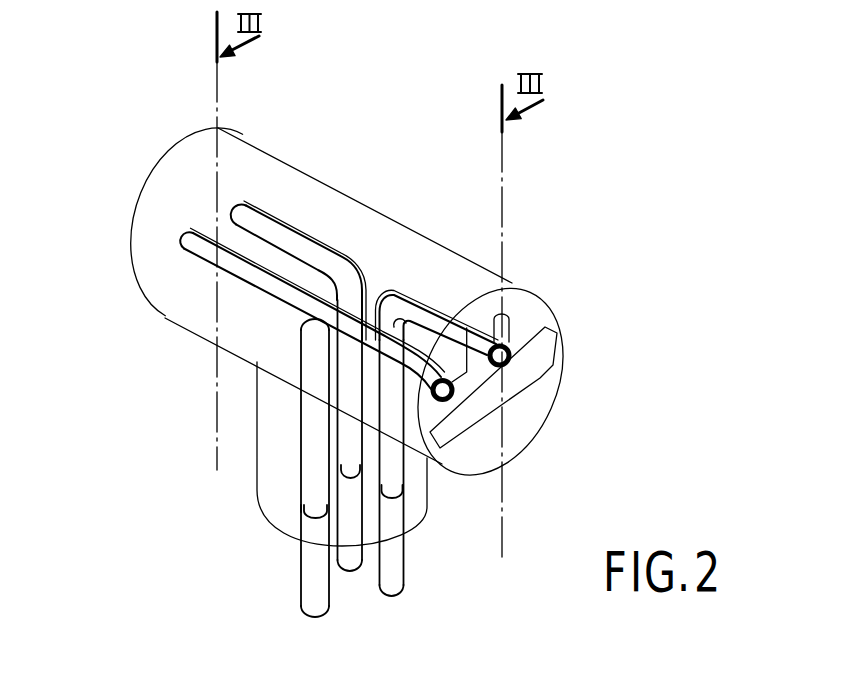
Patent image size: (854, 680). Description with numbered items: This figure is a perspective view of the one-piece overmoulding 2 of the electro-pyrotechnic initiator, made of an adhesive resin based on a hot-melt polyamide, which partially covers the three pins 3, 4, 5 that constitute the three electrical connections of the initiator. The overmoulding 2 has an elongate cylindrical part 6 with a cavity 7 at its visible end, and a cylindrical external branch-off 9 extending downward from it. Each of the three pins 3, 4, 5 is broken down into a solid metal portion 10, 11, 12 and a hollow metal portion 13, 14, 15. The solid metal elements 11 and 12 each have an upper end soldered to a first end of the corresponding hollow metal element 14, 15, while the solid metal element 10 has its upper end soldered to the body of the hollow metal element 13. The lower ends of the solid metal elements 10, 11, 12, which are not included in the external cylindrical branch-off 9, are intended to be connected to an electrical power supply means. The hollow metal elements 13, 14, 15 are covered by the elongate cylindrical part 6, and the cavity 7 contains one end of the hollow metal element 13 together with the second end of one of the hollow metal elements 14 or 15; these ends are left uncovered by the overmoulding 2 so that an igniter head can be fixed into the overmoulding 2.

The overmoulding 2 is at (136, 190).
The pin 3 is at (313, 577).
The pin 4 is at (397, 577).
The pin 5 is at (352, 567).
The elongate cylindrical part 6 is at (437, 246).
The cavity 7 is at (517, 395).
The cylindrical external branch-off 9 is at (268, 404).
The solid metal portion 10 is at (307, 446).
The solid metal portion 11 is at (398, 471).
The solid metal portion 12 is at (335, 455).
The hollow metal portion 13 is at (200, 258).
The hollow metal portion 14 is at (447, 323).
The hollow metal portion 15 is at (298, 235).